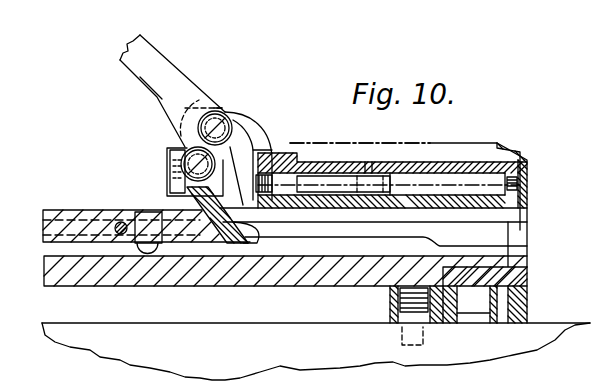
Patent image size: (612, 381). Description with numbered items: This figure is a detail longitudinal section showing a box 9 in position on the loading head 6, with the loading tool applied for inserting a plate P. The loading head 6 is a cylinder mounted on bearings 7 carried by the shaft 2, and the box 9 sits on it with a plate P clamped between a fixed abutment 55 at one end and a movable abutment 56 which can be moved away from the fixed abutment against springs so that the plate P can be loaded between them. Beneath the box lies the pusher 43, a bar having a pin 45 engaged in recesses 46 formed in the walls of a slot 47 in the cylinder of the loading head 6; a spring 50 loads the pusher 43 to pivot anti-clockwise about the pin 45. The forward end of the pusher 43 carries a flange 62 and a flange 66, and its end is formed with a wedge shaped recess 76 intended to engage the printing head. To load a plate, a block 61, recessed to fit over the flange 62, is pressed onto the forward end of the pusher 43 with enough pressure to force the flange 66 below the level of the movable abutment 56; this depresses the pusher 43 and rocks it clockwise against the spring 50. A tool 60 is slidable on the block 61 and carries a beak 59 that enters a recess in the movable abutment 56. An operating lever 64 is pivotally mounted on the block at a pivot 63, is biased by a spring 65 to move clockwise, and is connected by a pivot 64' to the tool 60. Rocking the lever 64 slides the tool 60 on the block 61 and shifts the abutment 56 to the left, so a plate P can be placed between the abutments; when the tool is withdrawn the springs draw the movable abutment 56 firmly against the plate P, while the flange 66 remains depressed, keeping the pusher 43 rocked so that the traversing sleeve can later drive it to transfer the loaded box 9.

The shaft 2 is at (316, 351).
The loading head 6 is at (177, 278).
The bearings 7 is at (470, 307).
The box 9 is at (520, 137).
The pusher 43 is at (83, 200).
The pin 45 is at (122, 233).
The recesses 46 is at (327, 230).
The slot 47 is at (382, 250).
The spring 50 is at (143, 223).
The fixed abutment 55 is at (527, 155).
The movable abutment 56 is at (320, 164).
The beak 59 is at (268, 155).
The tool 60 is at (228, 125).
The block 61 is at (168, 170).
The flange 62 is at (192, 192).
The pivot 63 is at (168, 147).
The operating lever 64 is at (166, 91).
The pivot 64' is at (214, 86).
The spring 65 is at (207, 150).
The flange 66 is at (250, 125).
The wedge shaped recess 76 is at (255, 232).
The plate P is at (440, 143).